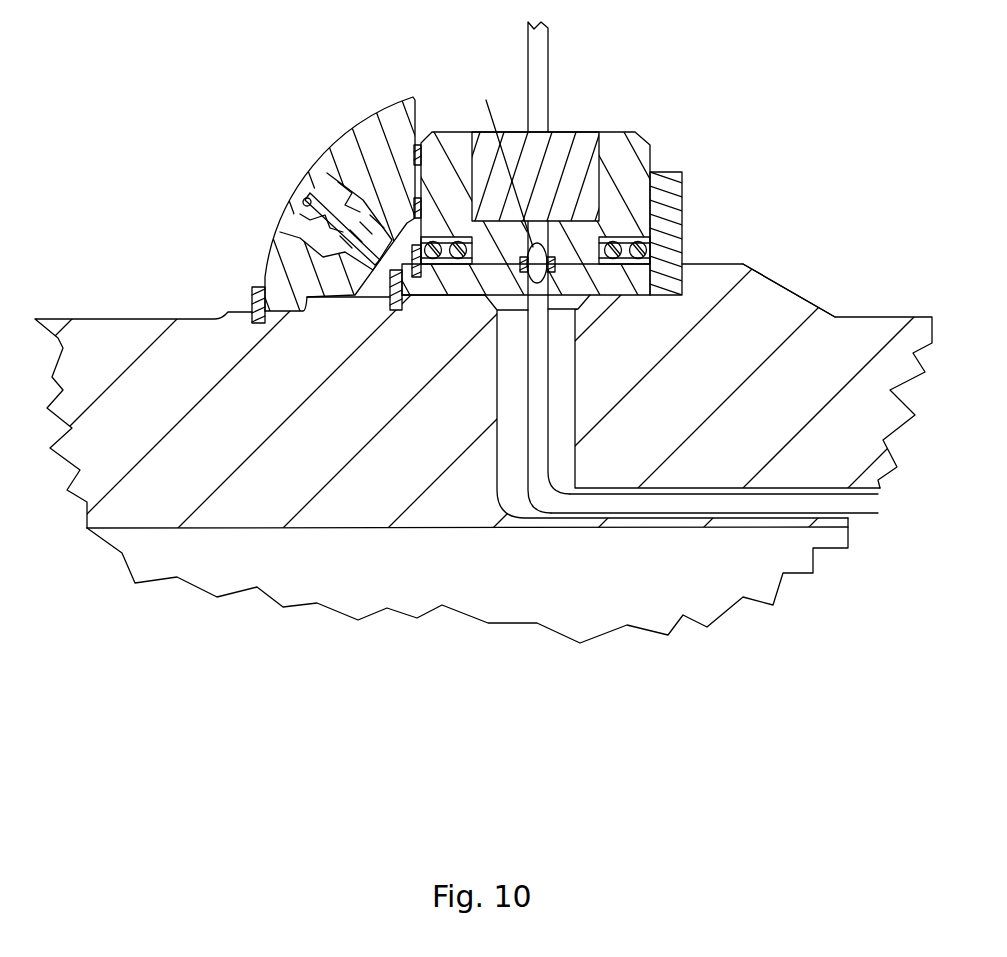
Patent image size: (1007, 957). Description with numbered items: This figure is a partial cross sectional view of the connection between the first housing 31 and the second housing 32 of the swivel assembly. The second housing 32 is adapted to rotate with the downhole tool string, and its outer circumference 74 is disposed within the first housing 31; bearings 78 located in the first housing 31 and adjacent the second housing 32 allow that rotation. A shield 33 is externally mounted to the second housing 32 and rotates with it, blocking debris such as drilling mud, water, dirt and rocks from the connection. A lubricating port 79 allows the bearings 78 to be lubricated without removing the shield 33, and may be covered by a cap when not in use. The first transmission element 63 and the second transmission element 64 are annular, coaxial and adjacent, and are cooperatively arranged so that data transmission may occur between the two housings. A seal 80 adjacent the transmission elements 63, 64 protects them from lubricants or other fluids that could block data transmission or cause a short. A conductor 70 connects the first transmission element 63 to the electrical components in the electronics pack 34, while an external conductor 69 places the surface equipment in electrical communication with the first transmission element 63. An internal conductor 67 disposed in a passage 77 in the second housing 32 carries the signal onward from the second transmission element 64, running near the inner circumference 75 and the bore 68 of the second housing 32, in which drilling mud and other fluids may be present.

The first housing 31 is at (630, 163).
The second housing 32 is at (308, 450).
The shield 33 is at (378, 122).
The electronics pack 34 is at (573, 140).
The first transmission element 63 is at (486, 100).
The second transmission element 64 is at (547, 295).
The internal conductor 67 is at (795, 500).
The bore 68 is at (398, 583).
The external conductor 69 is at (543, 50).
The conductor 70 is at (547, 240).
The outer circumference 74 is at (783, 285).
The inner circumference 75 is at (634, 528).
The passage 77 is at (568, 470).
The bearings 78 is at (441, 266).
The lubricating port 79 is at (294, 193).
The seal 80 is at (557, 273).